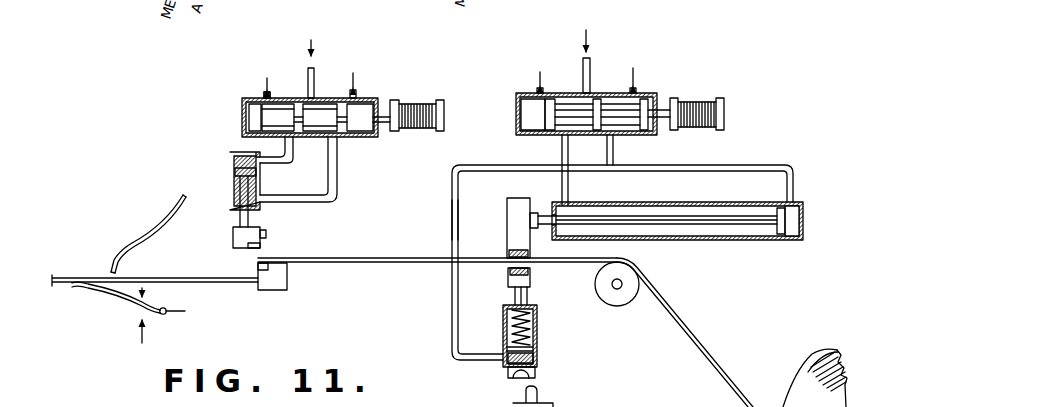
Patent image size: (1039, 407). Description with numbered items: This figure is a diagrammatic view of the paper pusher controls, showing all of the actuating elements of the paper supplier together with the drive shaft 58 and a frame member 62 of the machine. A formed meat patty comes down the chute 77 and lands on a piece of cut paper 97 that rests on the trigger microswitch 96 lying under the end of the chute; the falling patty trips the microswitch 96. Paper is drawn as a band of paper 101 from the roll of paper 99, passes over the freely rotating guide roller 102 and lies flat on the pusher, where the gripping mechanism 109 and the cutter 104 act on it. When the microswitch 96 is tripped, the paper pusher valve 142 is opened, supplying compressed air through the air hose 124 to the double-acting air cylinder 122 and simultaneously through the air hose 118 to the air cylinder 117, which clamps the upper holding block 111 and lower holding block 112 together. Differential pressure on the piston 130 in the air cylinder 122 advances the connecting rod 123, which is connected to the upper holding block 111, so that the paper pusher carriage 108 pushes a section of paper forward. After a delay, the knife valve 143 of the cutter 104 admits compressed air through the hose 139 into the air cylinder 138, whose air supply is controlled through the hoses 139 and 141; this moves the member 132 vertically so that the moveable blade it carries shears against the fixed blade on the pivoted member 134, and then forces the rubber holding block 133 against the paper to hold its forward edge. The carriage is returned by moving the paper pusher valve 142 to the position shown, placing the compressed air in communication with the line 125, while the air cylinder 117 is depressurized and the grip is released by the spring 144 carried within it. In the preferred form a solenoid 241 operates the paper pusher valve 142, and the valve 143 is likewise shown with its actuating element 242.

The drive shaft 58 is at (526, 393).
The frame member 62 is at (121, 404).
The chute 77 is at (163, 223).
The microswitch 96 is at (118, 309).
The paper 97 is at (56, 278).
The roll of paper 99 is at (812, 366).
The band of paper 101 is at (693, 332).
The guide roller 102 is at (618, 304).
The cutter 104 is at (229, 138).
The paper pusher carriage 108 is at (505, 212).
The gripping mechanism 109 is at (534, 282).
The upper holding block 111 is at (508, 253).
The lower holding block 112 is at (508, 276).
The air cylinder 117 is at (538, 325).
The air hose 118 is at (452, 216).
The air cylinder 122 is at (690, 202).
The connecting rod 123 is at (598, 222).
The air hose 124 is at (793, 162).
The air hose 125 is at (562, 147).
The piston 130 is at (779, 228).
The member 132 is at (233, 238).
The holding block 133 is at (266, 233).
The member 134 is at (288, 283).
The air cylinder 138 is at (232, 155).
The air hose 139 is at (287, 168).
The air hose 141 is at (338, 193).
The paper pusher valve 142 is at (566, 92).
The knife valve 143 is at (290, 96).
The spring 144 is at (530, 336).
The solenoid 241 is at (703, 97).
The return spring 242 is at (427, 99).